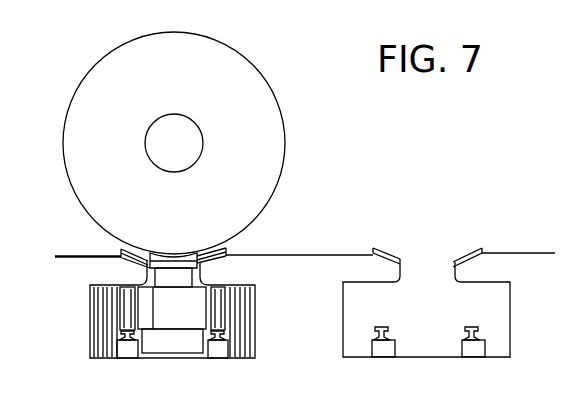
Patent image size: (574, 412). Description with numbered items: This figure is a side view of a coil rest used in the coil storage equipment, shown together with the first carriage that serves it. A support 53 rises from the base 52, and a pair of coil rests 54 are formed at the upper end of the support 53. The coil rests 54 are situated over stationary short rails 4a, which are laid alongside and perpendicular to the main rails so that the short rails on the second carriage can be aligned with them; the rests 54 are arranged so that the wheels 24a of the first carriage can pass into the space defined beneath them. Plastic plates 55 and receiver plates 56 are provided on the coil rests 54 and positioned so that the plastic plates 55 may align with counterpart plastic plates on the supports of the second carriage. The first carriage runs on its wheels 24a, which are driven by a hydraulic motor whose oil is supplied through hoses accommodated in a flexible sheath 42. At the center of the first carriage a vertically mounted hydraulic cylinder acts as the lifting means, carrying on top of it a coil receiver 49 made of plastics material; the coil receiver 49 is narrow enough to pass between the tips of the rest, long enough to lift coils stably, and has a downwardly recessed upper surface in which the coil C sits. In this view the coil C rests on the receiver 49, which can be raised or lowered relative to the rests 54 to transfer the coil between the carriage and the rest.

The coil C is at (274, 92).
The coil receiver 49 is at (157, 255).
The plastic plates 55 is at (120, 250).
The receiver plates 56 is at (127, 262).
The support 53 is at (332, 263).
The coil rests 54 is at (230, 272).
The flexible sheath 42 is at (99, 297).
The base 52 is at (218, 365).
The wheels 24a is at (127, 313).
The short rails 4a is at (118, 337).